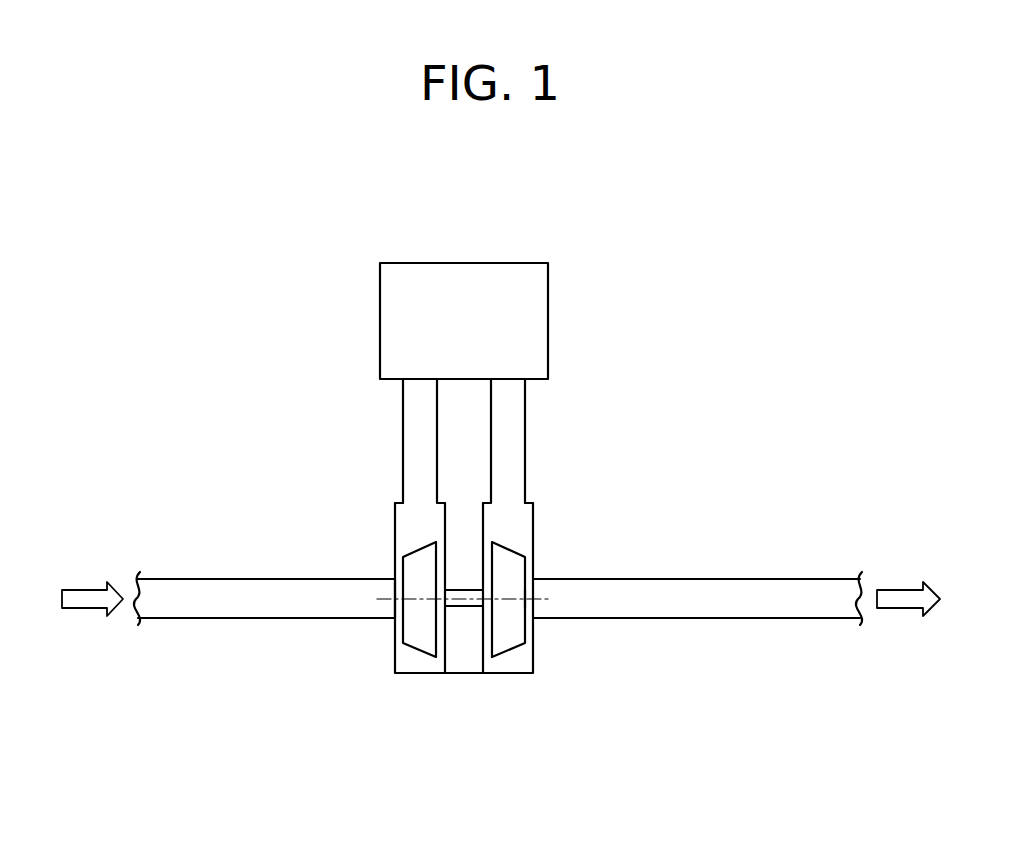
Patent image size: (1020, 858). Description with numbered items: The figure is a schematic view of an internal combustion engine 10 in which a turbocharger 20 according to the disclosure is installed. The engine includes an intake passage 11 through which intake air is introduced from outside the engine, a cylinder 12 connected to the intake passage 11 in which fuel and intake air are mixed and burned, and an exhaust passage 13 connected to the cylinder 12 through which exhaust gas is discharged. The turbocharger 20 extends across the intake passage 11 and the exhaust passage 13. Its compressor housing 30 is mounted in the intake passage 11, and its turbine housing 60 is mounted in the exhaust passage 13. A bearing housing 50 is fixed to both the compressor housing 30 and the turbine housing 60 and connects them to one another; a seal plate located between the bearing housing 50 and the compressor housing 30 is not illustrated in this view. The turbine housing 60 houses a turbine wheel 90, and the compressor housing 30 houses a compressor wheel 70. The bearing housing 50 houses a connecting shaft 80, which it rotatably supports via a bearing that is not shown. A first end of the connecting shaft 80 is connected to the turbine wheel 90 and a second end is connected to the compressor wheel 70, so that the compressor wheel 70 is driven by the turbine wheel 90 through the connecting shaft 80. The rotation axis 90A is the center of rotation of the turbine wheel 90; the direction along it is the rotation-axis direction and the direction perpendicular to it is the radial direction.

The internal combustion engine 10 is at (287, 282).
The intake passage 11 is at (403, 410).
The cylinder 12 is at (380, 302).
The exhaust passage 13 is at (525, 398).
The turbocharger 20 is at (366, 654).
The compressor housing 30 is at (395, 518).
The bearing housing 50 is at (455, 673).
The turbine housing 60 is at (533, 531).
The compressor wheel 70 is at (418, 650).
The connecting shaft 80 is at (463, 607).
The turbine wheel 90 is at (510, 650).
The rotation axis 90A is at (538, 598).